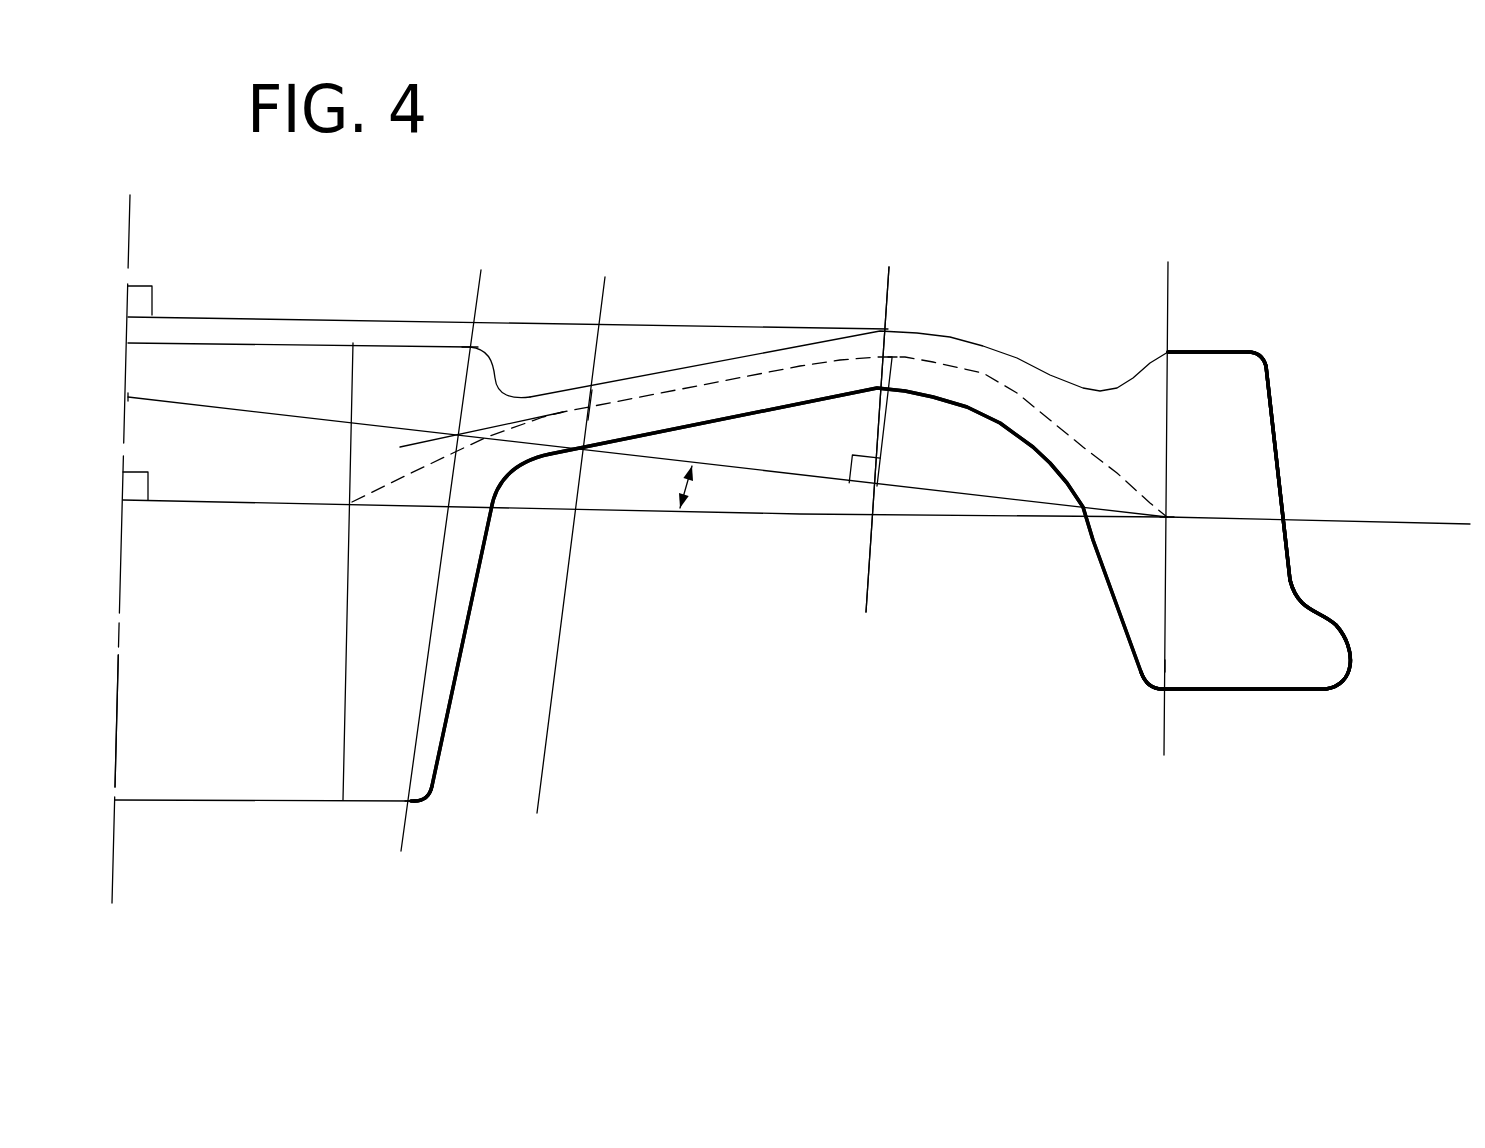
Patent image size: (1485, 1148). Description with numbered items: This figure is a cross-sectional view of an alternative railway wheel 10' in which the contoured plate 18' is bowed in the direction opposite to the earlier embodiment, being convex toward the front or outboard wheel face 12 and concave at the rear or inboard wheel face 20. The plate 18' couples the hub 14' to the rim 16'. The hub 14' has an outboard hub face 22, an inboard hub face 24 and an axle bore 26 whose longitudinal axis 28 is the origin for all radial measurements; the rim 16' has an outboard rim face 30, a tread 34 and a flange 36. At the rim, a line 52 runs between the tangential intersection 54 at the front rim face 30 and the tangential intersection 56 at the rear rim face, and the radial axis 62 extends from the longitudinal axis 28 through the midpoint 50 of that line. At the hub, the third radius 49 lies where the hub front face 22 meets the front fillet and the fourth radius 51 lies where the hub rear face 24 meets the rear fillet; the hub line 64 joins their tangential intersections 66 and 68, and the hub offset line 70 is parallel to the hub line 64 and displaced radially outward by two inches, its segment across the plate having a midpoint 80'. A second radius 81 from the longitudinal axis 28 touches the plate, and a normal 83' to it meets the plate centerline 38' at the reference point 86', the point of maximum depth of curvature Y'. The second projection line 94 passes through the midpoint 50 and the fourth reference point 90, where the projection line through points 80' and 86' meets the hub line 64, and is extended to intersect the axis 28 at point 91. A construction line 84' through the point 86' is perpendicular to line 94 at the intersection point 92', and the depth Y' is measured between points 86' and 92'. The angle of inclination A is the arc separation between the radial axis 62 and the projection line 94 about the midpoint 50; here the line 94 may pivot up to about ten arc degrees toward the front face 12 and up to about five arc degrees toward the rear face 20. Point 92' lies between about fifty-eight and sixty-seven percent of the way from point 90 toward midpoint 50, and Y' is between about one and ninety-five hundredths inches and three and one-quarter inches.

The wheel 10' is at (1245, 463).
The front or outboard wheel face 12 is at (839, 214).
The hub 14' is at (451, 653).
The rim 16' is at (1245, 550).
The plate 18' is at (849, 479).
The rear or inboard wheel face 20 is at (781, 588).
The outboard hub face 22 is at (248, 345).
The inboard hub face 24 is at (227, 801).
The axle bore 26 is at (184, 777).
The longitudinal axis 28 is at (131, 250).
The outboard rim face 30 is at (1228, 352).
The tread 34 is at (1278, 441).
The flange 36 is at (1326, 690).
The plate centerline 38' is at (759, 437).
The third radius 49 is at (490, 357).
The midpoint 50 is at (1167, 517).
The fourth radius 51 is at (432, 792).
The line 52 is at (1165, 665).
The tangential intersection 54 is at (1168, 352).
The tangential intersection 56 is at (1160, 690).
The radial axis 62 is at (196, 501).
The hub line 64 is at (476, 302).
The tangential intersection 66 is at (465, 342).
The tangential intersection 68 is at (412, 803).
The hub offset line 70 is at (607, 292).
The second reference point 80' is at (629, 377).
The second radius 81 is at (297, 317).
The normal 83' is at (912, 420).
The construction line 84' is at (904, 439).
The third reference point 86' is at (928, 320).
The fourth reference point 90 is at (457, 436).
The point 91 is at (128, 397).
The intersection point 92' is at (835, 482).
The second projection line 94 is at (238, 412).
The angle of inclination A is at (683, 480).
The maximum depth of curvature Y' is at (910, 422).